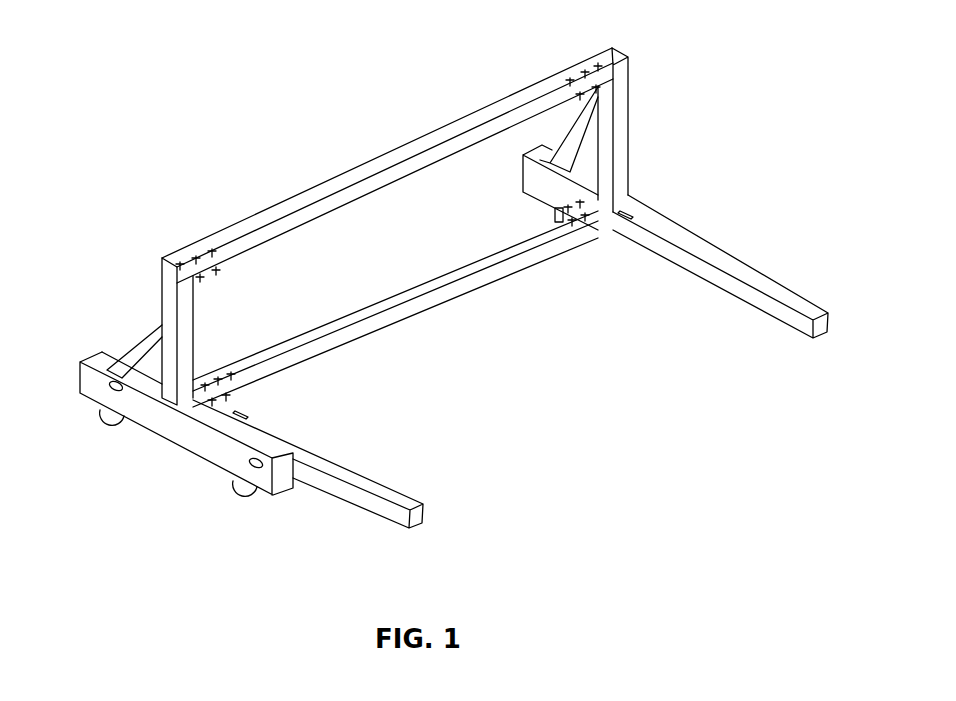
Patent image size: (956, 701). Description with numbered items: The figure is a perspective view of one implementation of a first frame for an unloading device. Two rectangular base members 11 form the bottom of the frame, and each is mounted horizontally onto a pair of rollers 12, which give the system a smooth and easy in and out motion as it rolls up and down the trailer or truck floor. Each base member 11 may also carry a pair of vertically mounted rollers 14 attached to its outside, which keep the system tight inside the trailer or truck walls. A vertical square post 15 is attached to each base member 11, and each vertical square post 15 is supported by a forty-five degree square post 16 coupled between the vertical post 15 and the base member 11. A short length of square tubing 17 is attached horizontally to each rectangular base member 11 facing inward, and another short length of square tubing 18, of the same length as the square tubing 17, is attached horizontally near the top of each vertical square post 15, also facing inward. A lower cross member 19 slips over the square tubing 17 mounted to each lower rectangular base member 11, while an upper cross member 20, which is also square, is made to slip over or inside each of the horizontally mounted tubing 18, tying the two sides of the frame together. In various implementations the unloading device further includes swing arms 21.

The rectangular base member 11 is at (285, 472).
The rollers 12 is at (118, 428).
The vertically mounted rollers 14 is at (86, 382).
The vertical square post 15 is at (165, 298).
The 45 degree square post 16 is at (142, 346).
The square tubing 17 is at (210, 378).
The square tubing 18 is at (196, 252).
The lower cross member 19 is at (402, 300).
The upper cross member 20 is at (385, 160).
The swing arms 21 is at (410, 506).